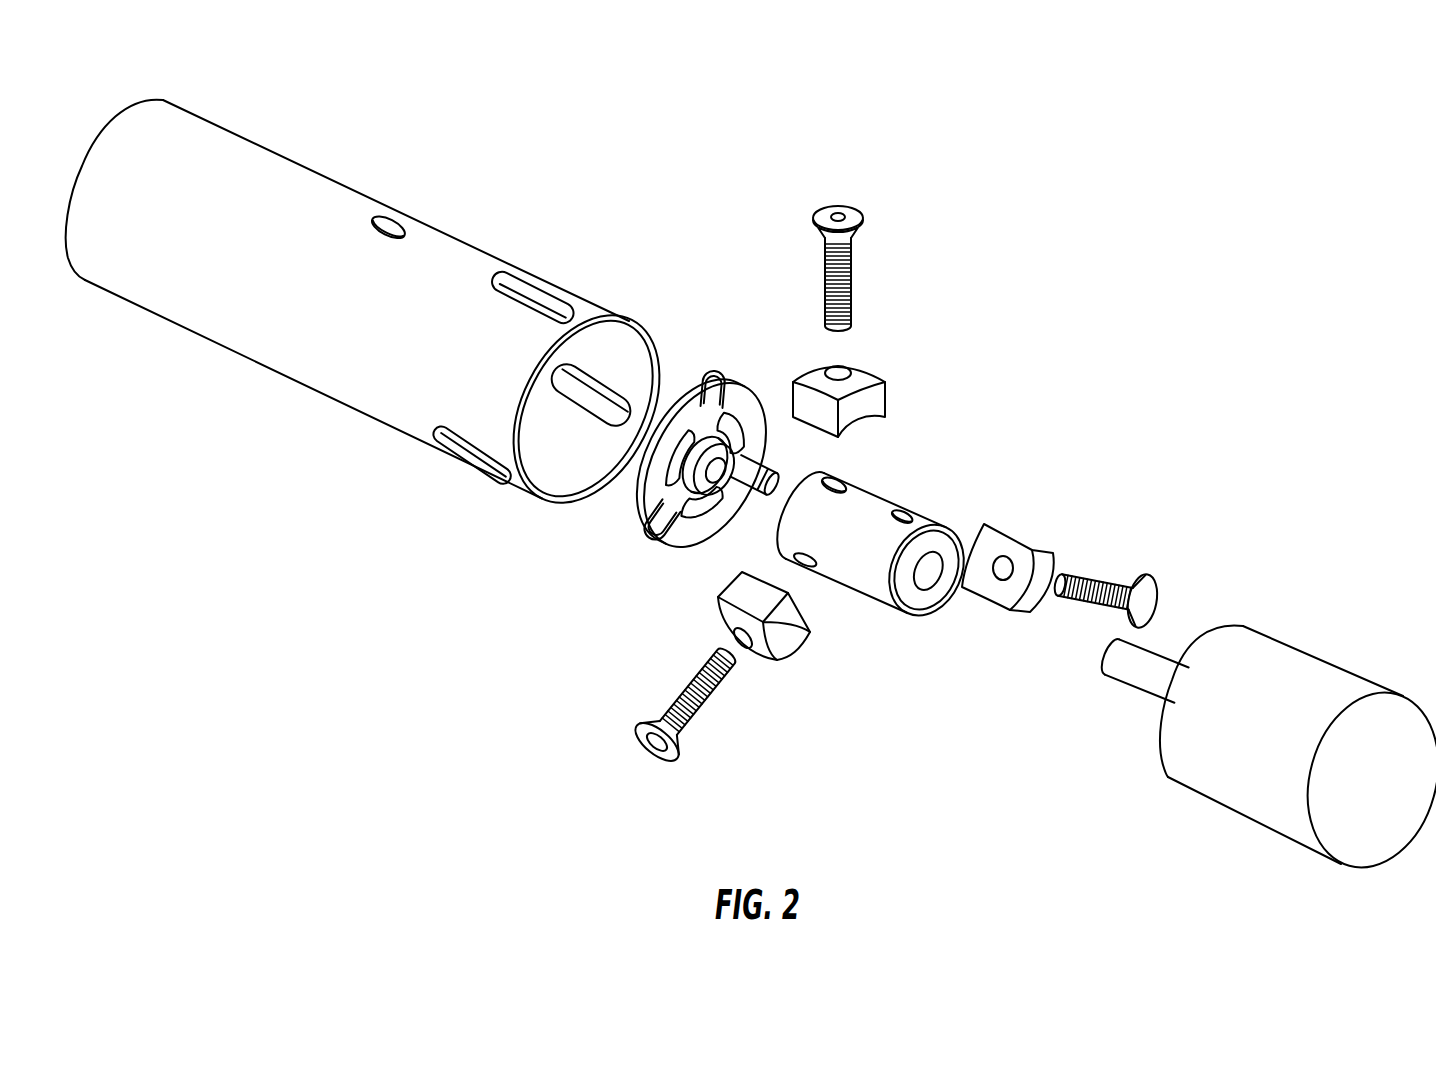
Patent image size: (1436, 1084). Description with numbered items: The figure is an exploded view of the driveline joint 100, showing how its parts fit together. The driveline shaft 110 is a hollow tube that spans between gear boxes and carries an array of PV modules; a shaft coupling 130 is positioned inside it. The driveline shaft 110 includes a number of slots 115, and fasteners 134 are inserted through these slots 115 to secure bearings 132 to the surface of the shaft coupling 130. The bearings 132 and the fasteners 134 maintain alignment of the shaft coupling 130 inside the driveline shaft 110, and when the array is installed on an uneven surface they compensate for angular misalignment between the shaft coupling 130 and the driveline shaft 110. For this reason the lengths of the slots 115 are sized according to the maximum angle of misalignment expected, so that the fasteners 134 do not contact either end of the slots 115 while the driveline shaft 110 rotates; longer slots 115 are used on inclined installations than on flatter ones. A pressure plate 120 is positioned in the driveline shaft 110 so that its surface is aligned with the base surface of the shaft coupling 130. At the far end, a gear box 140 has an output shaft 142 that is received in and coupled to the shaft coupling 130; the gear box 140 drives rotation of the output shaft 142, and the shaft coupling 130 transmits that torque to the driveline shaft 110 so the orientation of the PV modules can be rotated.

The driveline joint 100 is at (1373, 127).
The driveline shaft 110 is at (241, 123).
The slot 115 is at (456, 470).
The pressure plate 120 is at (636, 546).
The shaft coupling 130 is at (871, 477).
The bearing 132 is at (870, 364).
The fastener 134 is at (866, 199).
The gear box 140 is at (1235, 818).
The output shaft 142 is at (1121, 697).